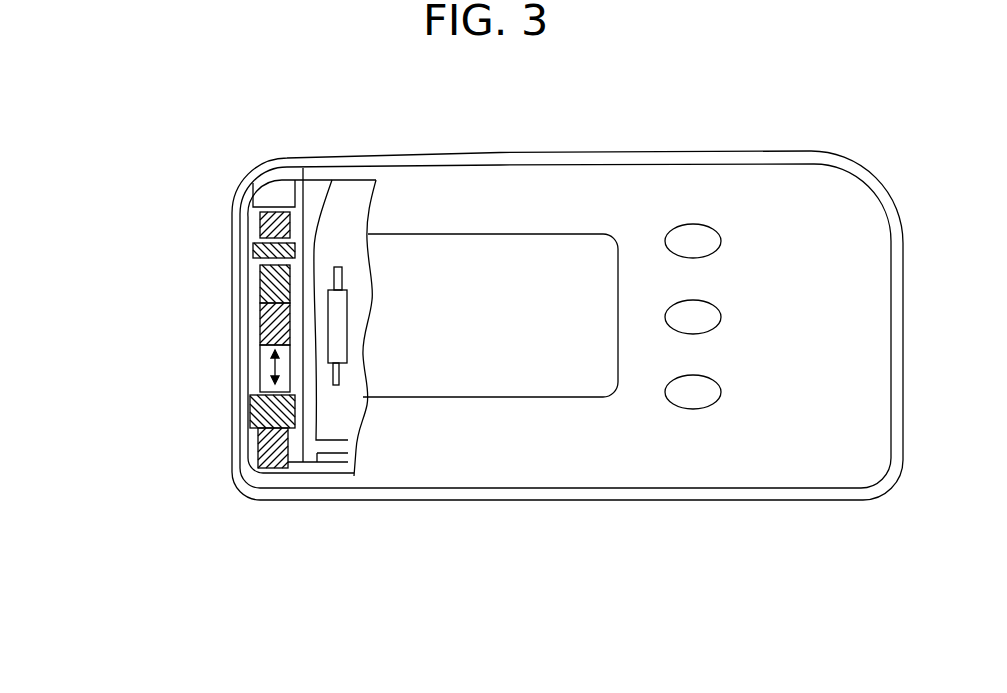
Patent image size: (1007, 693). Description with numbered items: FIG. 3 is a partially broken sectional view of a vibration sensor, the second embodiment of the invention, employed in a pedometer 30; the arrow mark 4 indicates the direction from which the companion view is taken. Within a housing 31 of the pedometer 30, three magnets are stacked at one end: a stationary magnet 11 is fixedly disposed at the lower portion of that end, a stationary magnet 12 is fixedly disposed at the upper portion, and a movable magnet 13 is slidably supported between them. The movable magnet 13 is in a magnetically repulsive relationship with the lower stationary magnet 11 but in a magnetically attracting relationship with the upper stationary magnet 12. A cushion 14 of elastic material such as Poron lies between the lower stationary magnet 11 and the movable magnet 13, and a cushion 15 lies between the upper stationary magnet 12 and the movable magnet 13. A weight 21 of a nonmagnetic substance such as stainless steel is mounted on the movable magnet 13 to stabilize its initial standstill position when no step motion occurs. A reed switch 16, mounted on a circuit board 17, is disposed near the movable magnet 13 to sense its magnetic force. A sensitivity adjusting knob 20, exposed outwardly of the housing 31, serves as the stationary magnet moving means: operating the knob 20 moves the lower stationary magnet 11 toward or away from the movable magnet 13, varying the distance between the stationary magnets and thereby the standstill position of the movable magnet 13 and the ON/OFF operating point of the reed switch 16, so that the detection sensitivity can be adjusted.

The section view direction arrow (FIG. 4) 4 is at (145, 337).
The stationary magnet 11 is at (262, 450).
The stationary magnet 12 is at (262, 227).
The movable magnet 13 is at (267, 330).
The cushion 14 is at (262, 418).
The cushion 15 is at (256, 252).
The reed switch 16 is at (340, 347).
The circuit board 17 is at (333, 205).
The sensitivity adjusting knob 20 is at (333, 462).
The weight 21 is at (266, 285).
The pedometer 30 is at (592, 145).
The housing 31 is at (278, 177).